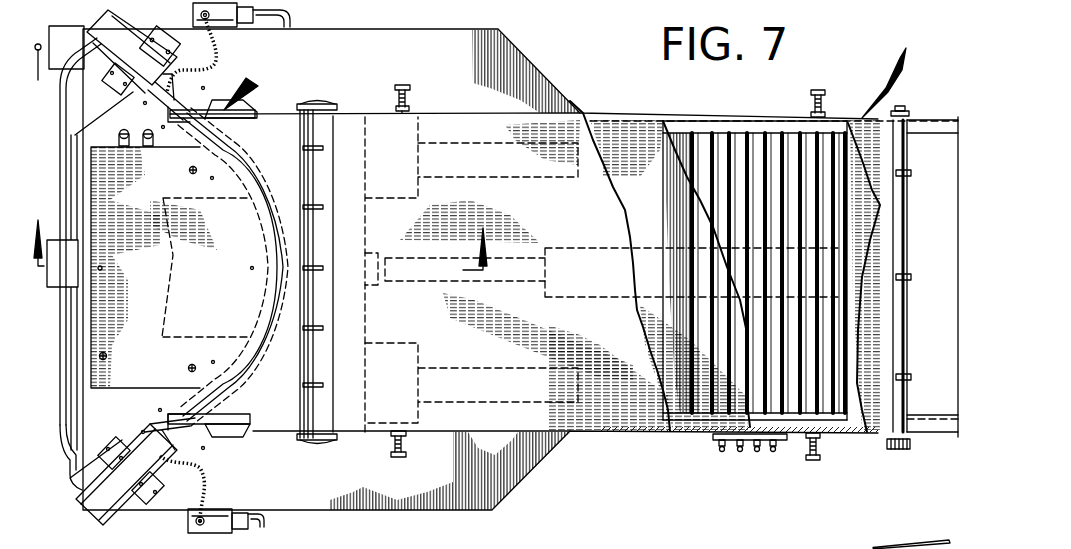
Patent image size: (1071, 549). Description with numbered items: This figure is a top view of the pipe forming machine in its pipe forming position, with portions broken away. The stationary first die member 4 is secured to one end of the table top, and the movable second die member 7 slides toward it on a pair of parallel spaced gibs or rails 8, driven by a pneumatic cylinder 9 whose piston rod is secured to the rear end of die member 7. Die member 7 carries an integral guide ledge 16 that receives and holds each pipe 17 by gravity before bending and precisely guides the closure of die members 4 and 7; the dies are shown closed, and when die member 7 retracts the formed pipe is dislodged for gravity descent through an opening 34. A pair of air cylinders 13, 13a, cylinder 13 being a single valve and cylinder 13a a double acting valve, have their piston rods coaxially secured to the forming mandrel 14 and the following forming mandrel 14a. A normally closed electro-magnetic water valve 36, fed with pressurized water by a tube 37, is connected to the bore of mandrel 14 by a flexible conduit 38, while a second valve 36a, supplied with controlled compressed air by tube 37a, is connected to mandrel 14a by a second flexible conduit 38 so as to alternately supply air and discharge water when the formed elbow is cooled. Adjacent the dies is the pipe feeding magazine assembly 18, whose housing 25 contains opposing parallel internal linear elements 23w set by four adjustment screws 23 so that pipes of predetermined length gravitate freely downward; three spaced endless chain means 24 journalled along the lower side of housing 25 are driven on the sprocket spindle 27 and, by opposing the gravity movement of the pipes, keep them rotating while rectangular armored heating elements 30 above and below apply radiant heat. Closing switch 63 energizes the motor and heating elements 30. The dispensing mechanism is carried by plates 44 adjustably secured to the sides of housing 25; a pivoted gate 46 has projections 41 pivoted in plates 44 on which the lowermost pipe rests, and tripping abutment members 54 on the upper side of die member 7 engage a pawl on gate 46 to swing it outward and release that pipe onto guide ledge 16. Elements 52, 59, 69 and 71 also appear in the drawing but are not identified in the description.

The stationary first die member 4 is at (136, 256).
The movable forming second die member 7 is at (283, 166).
The gibs or rails 8 is at (530, 200).
The pneumatic cylinder 9 is at (568, 248).
The air cylinder 13 is at (98, 508).
The air cylinder 13a is at (108, 18).
The mandrel 14 is at (185, 440).
The following forming mandrel 14a is at (178, 90).
The guide ledge 16 is at (168, 290).
The pipe 17 is at (715, 217).
The pipe feeding magazine assembly 18 is at (910, 232).
The adjustment screws 23 is at (408, 86).
The internal linear elements 23w is at (717, 130).
The endless chain means 24 is at (910, 176).
The conveyor housing 25 is at (460, 328).
The sprocket spindle 27 is at (906, 330).
The armored heating elements 30 is at (672, 235).
The opening 34 is at (253, 80).
The water valve 36 is at (218, 526).
The electro-magnetic valve 36a is at (196, 13).
The water tube 37 is at (262, 514).
The air tube 37a is at (292, 14).
The flexible conduit 38 is at (216, 53).
The projections 41 is at (322, 203).
The plates 44 is at (350, 113).
The gate 46 is at (300, 106).
The cap 52 is at (317, 100).
The tripping abutment members 54 is at (167, 109).
The knob 59 is at (42, 75).
The switch 63 is at (772, 452).
The pipe 69 is at (59, 116).
The wire 71 is at (117, 90).